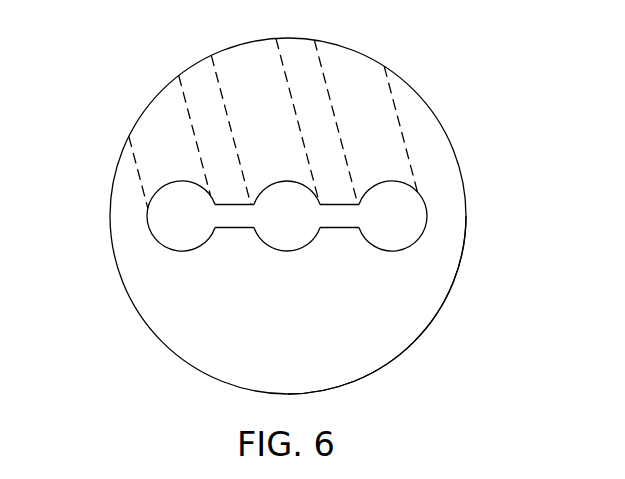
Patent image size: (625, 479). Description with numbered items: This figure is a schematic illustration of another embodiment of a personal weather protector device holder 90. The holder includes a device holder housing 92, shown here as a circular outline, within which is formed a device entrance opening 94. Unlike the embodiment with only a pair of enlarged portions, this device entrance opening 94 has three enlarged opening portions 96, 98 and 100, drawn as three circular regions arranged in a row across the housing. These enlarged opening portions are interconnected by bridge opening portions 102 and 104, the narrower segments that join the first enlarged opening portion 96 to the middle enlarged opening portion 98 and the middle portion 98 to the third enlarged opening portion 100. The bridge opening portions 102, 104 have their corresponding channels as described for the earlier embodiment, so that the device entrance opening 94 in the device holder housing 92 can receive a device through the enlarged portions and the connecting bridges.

The personal weather protector device holder 90 is at (259, 216).
The device holder housing 92 is at (377, 306).
The device entrance opening 94 is at (136, 252).
The enlarged opening portion 96 is at (130, 202).
The enlarged opening portion 98 is at (287, 262).
The enlarged opening portion 100 is at (445, 239).
The bridge opening portion 102 is at (237, 291).
The bridge opening portion 104 is at (347, 288).